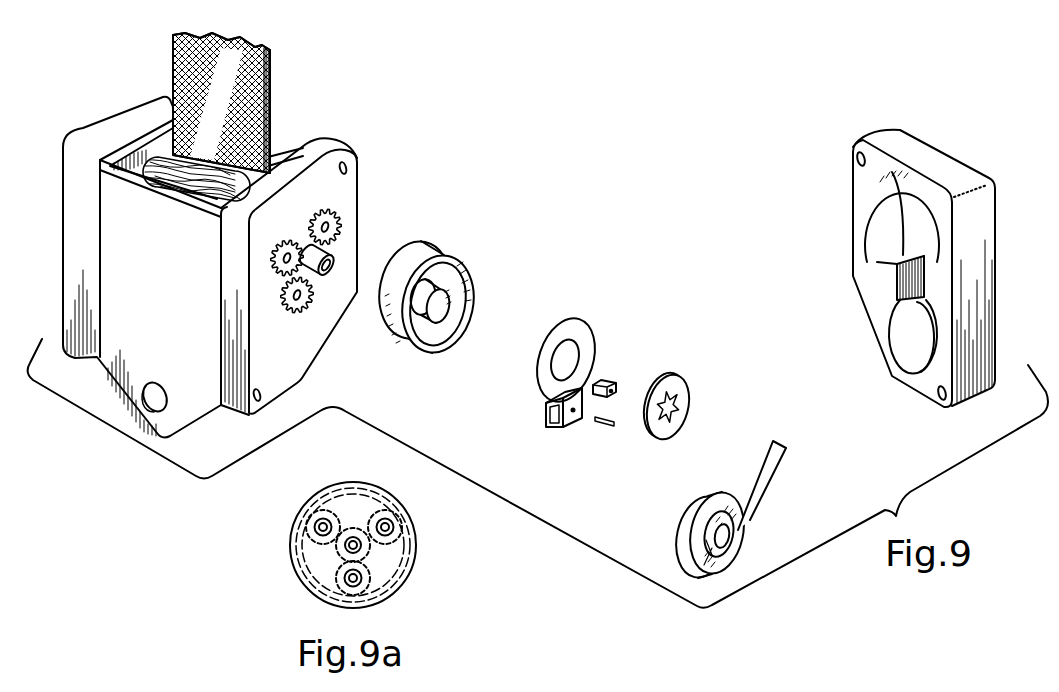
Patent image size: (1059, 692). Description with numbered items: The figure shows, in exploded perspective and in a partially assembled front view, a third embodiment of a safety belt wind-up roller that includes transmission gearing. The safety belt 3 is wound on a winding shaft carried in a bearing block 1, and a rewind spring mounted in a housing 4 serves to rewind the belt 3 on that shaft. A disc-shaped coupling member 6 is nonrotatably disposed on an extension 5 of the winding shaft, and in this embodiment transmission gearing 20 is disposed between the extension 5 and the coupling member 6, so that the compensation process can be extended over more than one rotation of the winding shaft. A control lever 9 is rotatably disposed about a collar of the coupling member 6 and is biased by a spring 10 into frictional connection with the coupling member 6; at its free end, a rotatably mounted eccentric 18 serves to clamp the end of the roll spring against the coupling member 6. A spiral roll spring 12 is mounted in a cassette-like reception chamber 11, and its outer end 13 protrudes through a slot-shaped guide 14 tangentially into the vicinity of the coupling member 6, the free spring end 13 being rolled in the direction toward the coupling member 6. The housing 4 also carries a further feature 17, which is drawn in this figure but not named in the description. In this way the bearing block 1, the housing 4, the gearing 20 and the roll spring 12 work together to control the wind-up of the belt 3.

In FIG. 9, the bearing block 1 is at (331, 146).
In FIG. 9, the safety belt 3 is at (270, 80).
In FIG. 9, the housing 4 is at (972, 283).
In FIG. 9, the extension of the winding shaft 5 is at (334, 254).
In FIG. 9, the coupling member 6 is at (462, 262).
In FIG. 9, the control lever 9 is at (582, 344).
In FIG. 9, the spring 10 is at (680, 388).
In FIG. 9, the reception chamber 11 is at (916, 358).
In FIG. 9, the roll spring 12 is at (688, 543).
In FIG. 9, the outer end of the roll spring 13 is at (783, 449).
In FIG. 9, the slot-shaped guide 14 is at (903, 292).
In FIG. 9, the ledge 17 is at (887, 272).
In FIG. 9, the eccentric 18 is at (606, 381).
In FIG. 9, the transmission gearing 20 is at (300, 208).
In FIG. 9A, the transmission gearing 20 is at (390, 552).